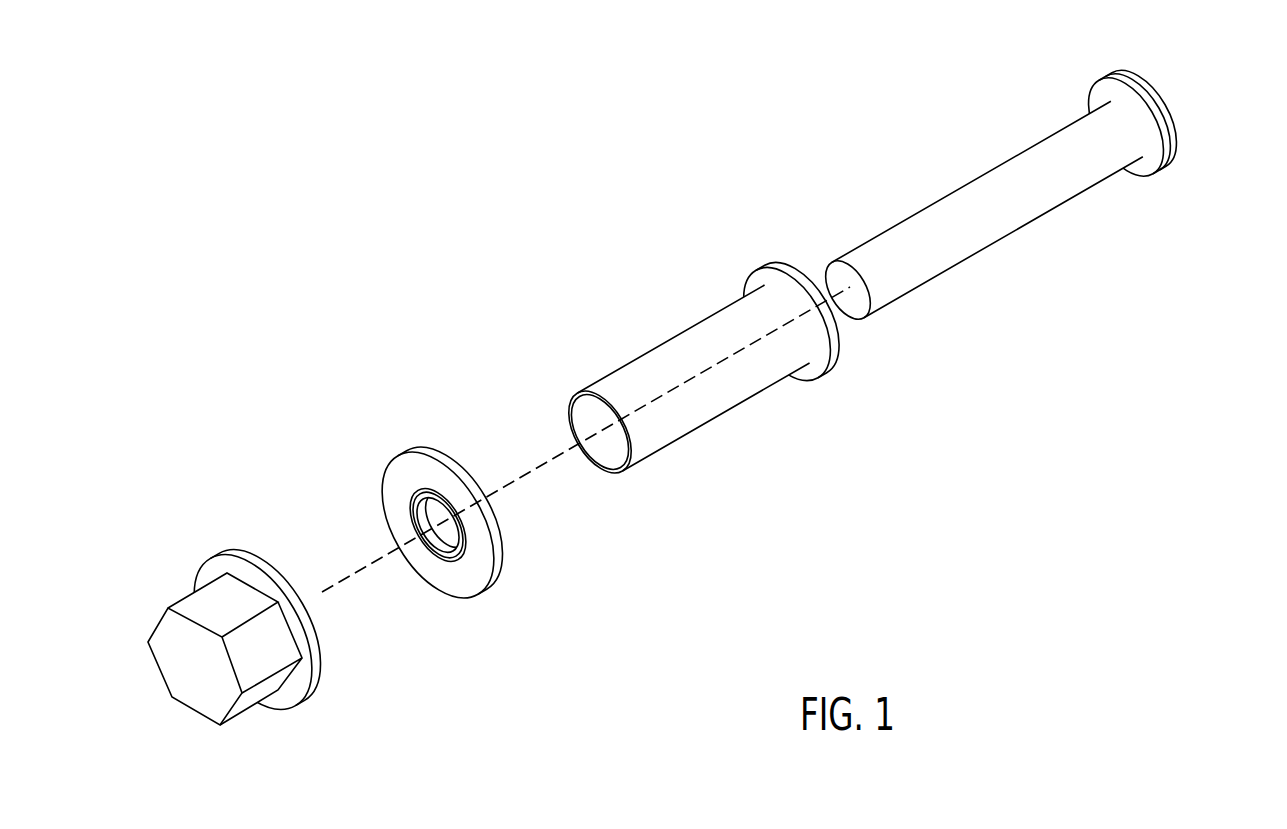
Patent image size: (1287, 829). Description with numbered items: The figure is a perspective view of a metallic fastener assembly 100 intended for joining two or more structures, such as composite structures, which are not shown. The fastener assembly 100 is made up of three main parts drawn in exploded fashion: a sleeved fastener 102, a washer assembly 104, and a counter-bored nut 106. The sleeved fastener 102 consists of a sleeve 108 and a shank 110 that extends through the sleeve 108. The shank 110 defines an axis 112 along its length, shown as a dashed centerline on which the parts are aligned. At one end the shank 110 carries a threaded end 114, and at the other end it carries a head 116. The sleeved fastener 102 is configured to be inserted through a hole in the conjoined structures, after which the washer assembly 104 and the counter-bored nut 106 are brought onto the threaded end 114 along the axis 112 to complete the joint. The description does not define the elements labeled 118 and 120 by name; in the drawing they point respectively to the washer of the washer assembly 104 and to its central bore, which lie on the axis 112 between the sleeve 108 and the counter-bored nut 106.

The fastener assembly 100 is at (701, 412).
The sleeved fastener 102 is at (1035, 204).
The washer assembly 104 is at (365, 585).
The counter-bored nut 106 is at (247, 712).
The sleeve 108 is at (693, 330).
The shank 110 is at (1075, 197).
The axis 112 is at (530, 472).
The threaded end 114 is at (885, 295).
The head 116 is at (1163, 165).
The washer 118 is at (470, 541).
The washer bore 120 is at (437, 562).